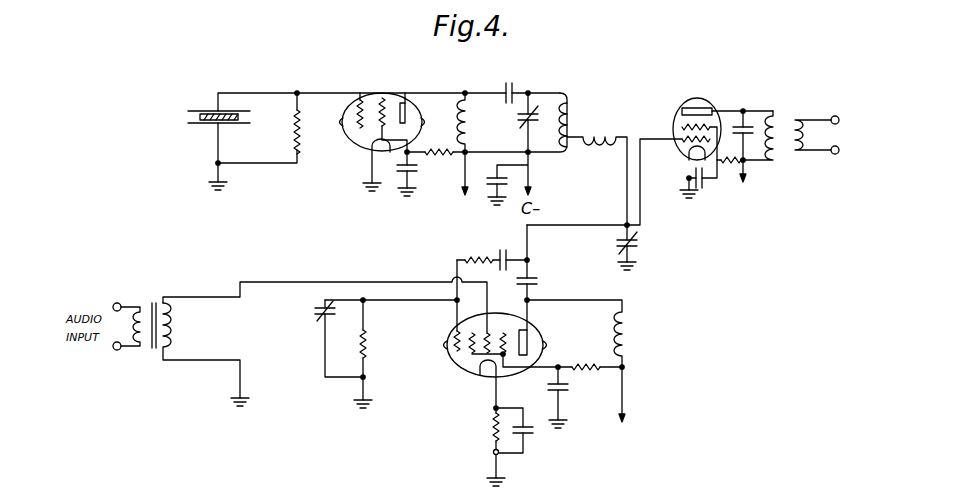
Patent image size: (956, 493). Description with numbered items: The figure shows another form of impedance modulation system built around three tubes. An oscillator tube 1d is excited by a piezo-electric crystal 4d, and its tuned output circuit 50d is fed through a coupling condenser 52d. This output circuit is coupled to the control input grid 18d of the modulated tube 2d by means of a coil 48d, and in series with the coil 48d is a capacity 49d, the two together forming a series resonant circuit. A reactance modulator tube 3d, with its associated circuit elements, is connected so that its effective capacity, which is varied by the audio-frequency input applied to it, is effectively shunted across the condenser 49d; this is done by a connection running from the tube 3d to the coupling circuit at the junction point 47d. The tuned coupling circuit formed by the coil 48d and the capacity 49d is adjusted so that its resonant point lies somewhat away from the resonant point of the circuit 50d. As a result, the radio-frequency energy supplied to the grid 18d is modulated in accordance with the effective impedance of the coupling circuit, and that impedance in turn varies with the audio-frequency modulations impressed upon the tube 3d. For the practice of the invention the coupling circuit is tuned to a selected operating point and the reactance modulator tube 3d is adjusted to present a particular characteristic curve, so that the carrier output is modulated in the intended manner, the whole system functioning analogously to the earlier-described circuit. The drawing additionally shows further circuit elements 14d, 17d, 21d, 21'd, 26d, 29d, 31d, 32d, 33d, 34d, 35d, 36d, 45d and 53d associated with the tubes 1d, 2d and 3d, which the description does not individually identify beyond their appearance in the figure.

The oscillator tube 1d is at (372, 92).
The modulated tube 2d is at (704, 133).
The reactance modulator tube 3d is at (488, 351).
The piezo-electric crystal 4d is at (186, 117).
The grid 14d is at (682, 127).
The output coil 17d is at (762, 115).
The control input grid 18d is at (687, 158).
The cathode 21d is at (479, 374).
The cathode resistor 21'd is at (492, 446).
The grid 26d is at (490, 335).
The coupling capacitor 29d is at (538, 277).
The plate choke coil 31d is at (630, 334).
The variable capacitor 32d is at (318, 313).
The grid leak resistor 33d is at (367, 351).
The grid 34d is at (452, 342).
The capacitor 35d is at (508, 249).
The resistor 36d is at (479, 258).
The output coil 45d is at (800, 124).
The junction point 47d is at (622, 222).
The coil 48d is at (597, 127).
The capacity 49d is at (646, 243).
The tuned output circuit 50d is at (552, 110).
The coupling condenser 52d is at (514, 88).
The plate coil 53d is at (471, 104).